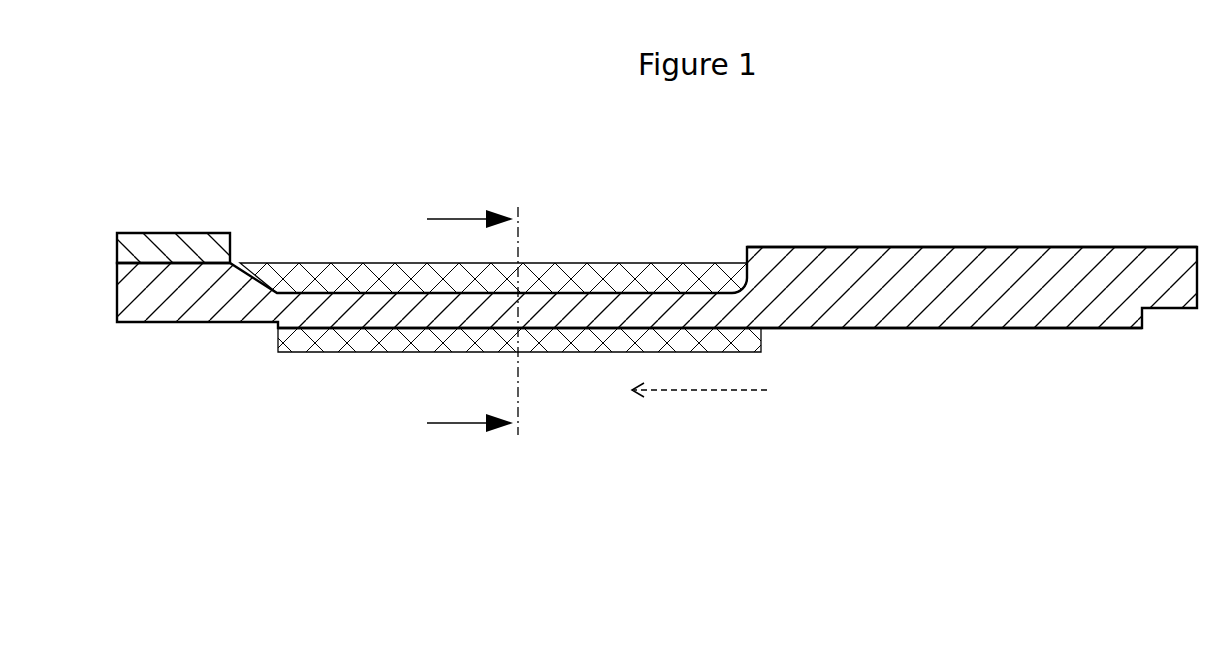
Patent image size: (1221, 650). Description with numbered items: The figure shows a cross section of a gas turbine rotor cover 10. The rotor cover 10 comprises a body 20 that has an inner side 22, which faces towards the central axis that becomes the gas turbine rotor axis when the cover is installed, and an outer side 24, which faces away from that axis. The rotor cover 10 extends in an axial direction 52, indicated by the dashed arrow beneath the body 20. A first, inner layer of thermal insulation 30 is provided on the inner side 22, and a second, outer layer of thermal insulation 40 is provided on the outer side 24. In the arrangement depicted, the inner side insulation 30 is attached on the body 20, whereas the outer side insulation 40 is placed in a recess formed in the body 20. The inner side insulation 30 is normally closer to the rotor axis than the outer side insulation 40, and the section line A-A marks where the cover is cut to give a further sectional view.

The rotor cover 10 is at (258, 148).
The body 20 is at (935, 283).
The inner side 22 is at (967, 328).
The outer side 24 is at (1045, 247).
The first layer of insulation 30 is at (335, 352).
The second layer of insulation 40 is at (649, 263).
The axial direction 52 is at (692, 392).